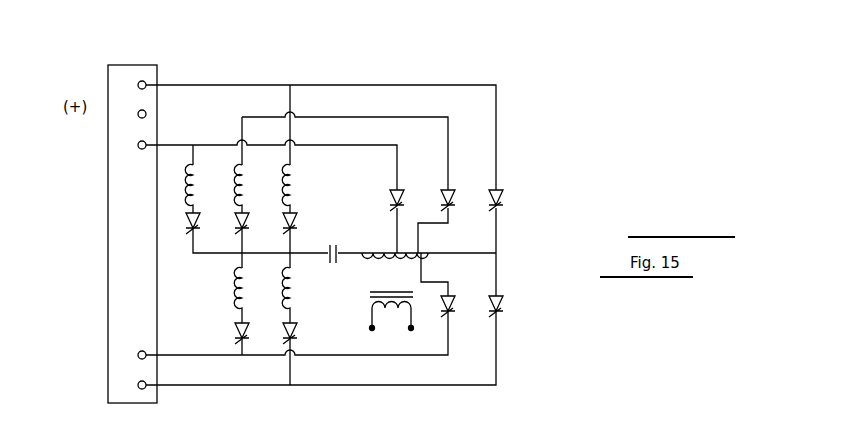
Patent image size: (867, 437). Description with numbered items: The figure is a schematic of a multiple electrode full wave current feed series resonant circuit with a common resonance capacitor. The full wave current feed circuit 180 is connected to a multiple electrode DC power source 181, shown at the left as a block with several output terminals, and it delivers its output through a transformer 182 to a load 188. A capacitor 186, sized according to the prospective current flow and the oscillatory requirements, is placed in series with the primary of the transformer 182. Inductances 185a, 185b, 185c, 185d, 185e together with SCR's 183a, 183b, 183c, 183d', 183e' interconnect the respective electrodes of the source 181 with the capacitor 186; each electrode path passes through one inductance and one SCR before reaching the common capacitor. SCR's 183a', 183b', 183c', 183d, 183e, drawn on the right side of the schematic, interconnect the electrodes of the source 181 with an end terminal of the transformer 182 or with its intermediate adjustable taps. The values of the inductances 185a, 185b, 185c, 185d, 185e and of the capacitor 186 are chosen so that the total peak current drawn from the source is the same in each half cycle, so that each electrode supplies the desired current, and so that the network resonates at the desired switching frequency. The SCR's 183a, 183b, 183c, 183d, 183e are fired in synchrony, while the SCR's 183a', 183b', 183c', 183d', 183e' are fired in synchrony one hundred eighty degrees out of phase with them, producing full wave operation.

The full wave current feed circuit 180 is at (485, 75).
The multiple electrode DC power source 181 is at (108, 243).
The transformer 182 is at (390, 277).
The SCR 183a is at (329, 179).
The SCR 183b is at (208, 178).
The SCR 183c is at (119, 251).
The SCR 183d is at (508, 293).
The SCR 183e is at (532, 315).
The SCR 183a' is at (534, 184).
The SCR 183b' is at (510, 167).
The SCR 183c' is at (484, 148).
The SCR 183d' is at (203, 336).
The SCR 183e' is at (318, 336).
The inductance 185a is at (296, 195).
The inductance 185b is at (246, 190).
The inductance 185c is at (190, 187).
The inductance 185d is at (239, 291).
The inductance 185e is at (294, 297).
The capacitor 186 is at (330, 243).
The load 188 is at (411, 331).